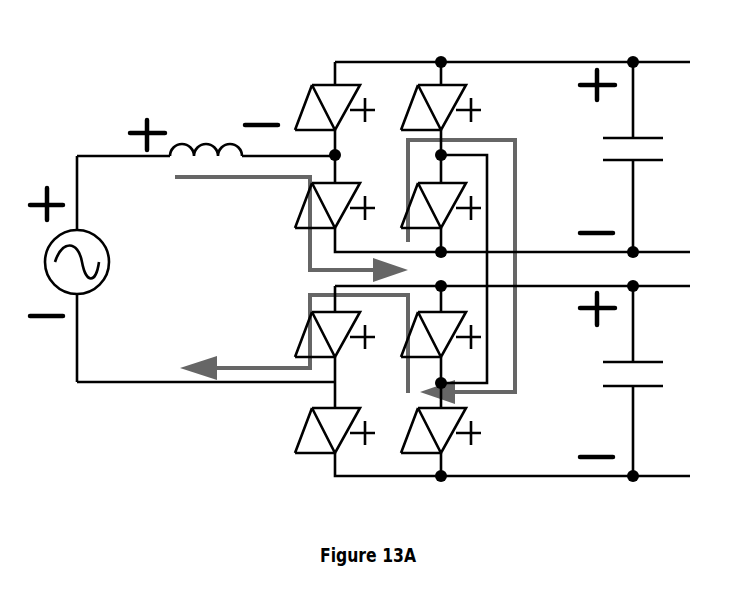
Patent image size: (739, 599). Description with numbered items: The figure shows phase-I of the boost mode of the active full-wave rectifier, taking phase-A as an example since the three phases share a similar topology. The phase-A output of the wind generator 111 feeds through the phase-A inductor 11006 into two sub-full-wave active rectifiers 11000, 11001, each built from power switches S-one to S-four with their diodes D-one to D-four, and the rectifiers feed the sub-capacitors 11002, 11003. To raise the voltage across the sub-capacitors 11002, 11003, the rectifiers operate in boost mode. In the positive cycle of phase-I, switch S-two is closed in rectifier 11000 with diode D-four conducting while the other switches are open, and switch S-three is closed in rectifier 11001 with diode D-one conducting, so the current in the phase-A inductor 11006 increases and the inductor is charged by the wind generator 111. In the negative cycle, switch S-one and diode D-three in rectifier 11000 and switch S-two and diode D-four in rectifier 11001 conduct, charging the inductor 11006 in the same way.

The wind generator 111 is at (94, 269).
The phase-A inductor 11006 is at (206, 126).
The sub-full-wave active rectifier 11000 is at (492, 197).
The sub-full-wave active rectifier 11001 is at (492, 401).
The sub-capacitor 11002 is at (631, 135).
The sub-capacitor 11003 is at (632, 401).